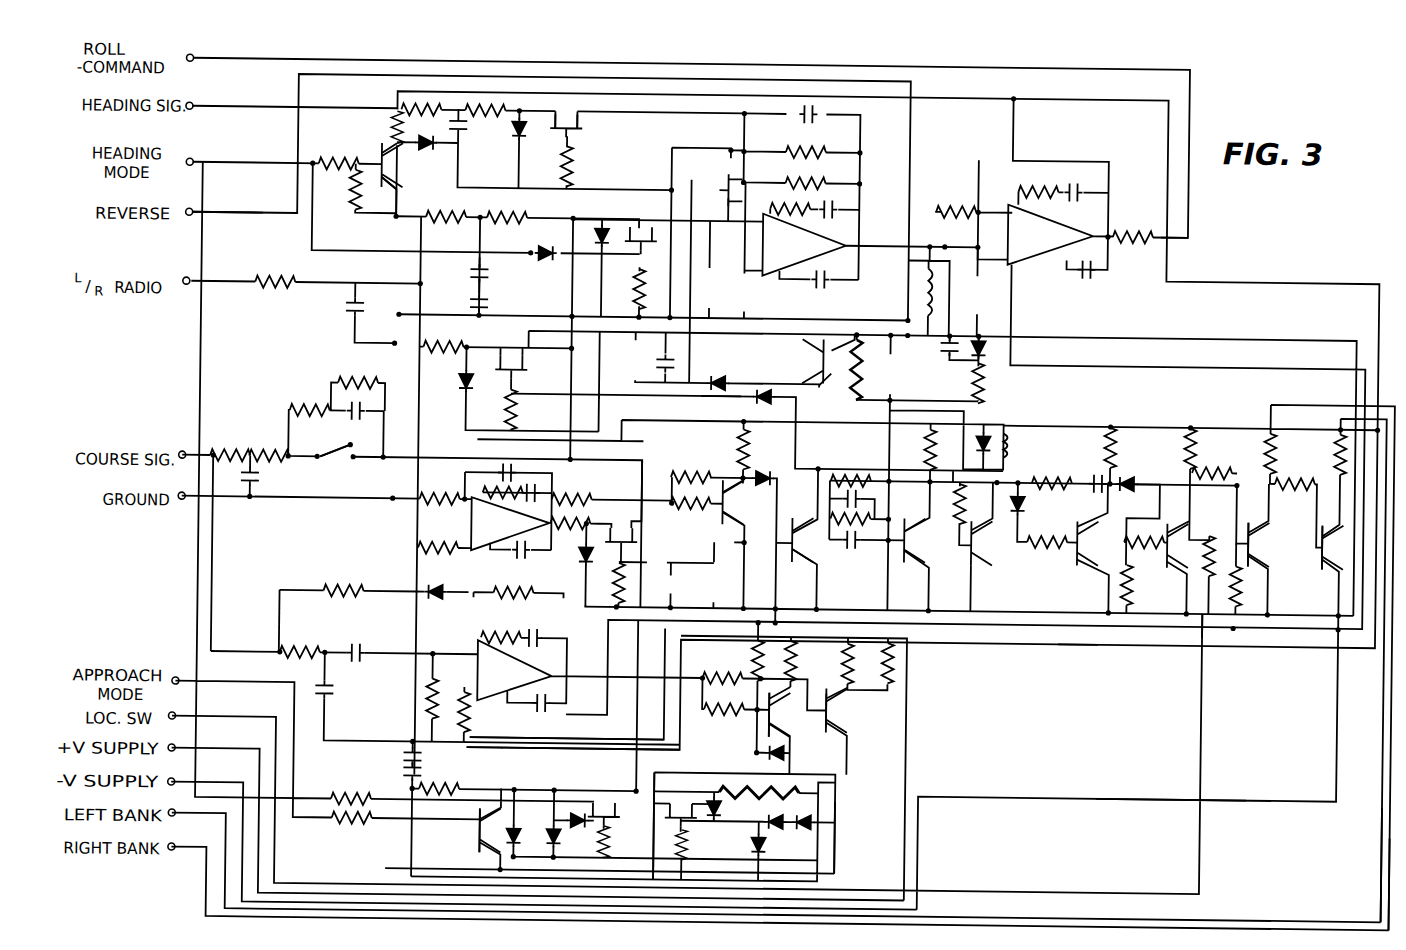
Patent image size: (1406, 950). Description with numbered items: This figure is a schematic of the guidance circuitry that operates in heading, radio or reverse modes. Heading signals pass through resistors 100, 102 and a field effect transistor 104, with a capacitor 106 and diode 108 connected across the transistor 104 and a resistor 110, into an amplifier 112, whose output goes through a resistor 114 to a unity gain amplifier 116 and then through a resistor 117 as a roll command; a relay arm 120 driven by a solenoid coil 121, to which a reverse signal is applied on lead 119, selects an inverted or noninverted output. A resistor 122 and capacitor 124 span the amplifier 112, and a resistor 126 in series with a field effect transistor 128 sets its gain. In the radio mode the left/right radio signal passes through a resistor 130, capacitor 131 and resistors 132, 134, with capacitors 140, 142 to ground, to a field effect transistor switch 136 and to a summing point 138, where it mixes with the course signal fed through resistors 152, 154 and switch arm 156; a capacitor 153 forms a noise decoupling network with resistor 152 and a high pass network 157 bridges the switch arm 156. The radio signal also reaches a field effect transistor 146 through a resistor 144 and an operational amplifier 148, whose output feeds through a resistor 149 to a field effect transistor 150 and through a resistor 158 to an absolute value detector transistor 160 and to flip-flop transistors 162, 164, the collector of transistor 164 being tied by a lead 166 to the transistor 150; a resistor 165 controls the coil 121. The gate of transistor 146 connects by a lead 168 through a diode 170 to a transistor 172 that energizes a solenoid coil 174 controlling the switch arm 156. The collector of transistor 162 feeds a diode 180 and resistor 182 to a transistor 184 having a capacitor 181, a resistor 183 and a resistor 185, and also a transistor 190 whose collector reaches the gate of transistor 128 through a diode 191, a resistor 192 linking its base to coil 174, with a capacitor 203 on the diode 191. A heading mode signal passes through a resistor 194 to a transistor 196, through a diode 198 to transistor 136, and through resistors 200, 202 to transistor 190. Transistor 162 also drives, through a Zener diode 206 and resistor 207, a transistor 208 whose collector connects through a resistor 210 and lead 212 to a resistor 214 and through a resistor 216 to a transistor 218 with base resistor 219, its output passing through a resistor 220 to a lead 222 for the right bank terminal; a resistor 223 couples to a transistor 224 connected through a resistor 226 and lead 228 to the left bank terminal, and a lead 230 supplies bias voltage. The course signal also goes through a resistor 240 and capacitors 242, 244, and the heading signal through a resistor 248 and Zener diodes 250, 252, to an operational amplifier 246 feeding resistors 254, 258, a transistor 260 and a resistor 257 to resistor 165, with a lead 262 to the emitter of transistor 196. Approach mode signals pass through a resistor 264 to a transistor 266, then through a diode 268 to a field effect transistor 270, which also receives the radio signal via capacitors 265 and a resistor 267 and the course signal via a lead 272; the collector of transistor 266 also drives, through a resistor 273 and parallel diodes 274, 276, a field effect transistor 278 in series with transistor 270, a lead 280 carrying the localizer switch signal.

The resistor 100 is at (422, 105).
The resistor 102 is at (482, 108).
The field effect transistor 104 is at (636, 133).
The capacitor 106 is at (458, 134).
The diode 108 is at (514, 138).
The resistor 110 is at (570, 174).
The amplifier 112 is at (803, 244).
The resistor 114 is at (953, 206).
The unity gain amplifier 116 is at (1056, 231).
The resistor 117 is at (1138, 228).
The lead 119 is at (252, 219).
The relay arm 120 is at (936, 239).
The solenoid coil 121 is at (922, 294).
The resistor 122 is at (785, 180).
The capacitor 124 is at (814, 117).
The resistor 126 is at (785, 149).
The field effect transistor 128 is at (716, 157).
The resistor 130 is at (266, 284).
The capacitor 131 is at (347, 303).
The resistor 132 is at (435, 218).
The resistor 134 is at (510, 220).
The field effect transistor switch 136 is at (637, 228).
The summing point 138 is at (572, 464).
The capacitor 140 is at (470, 278).
The capacitor 142 is at (470, 300).
The resistor 144 is at (444, 347).
The field effect transistor 146 is at (515, 356).
The operational amplifier 148 is at (479, 511).
The resistor 149 is at (571, 538).
The field effect transistor 150 is at (622, 527).
The resistor 152 is at (231, 453).
The capacitor 153 is at (259, 480).
The resistor 154 is at (274, 457).
The switch arm 156 is at (336, 468).
The high pass network 157 is at (320, 396).
The resistor 158 is at (715, 480).
The transistor 160 is at (745, 497).
The transistor 162 is at (808, 545).
The transistor 164 is at (925, 548).
The resistor 165 is at (984, 386).
The lead 166 is at (840, 564).
The lead 168 is at (701, 402).
The diode 170 is at (762, 404).
The transistor 172 is at (993, 551).
The solenoid coil 174 is at (993, 448).
The diode 180 is at (1024, 505).
The capacitor 181 is at (1092, 474).
The resistor 182 is at (1051, 544).
The resistor 183 is at (1105, 455).
The transistor 184 is at (1095, 538).
The resistor 185 is at (1004, 449).
The transistor 190 is at (818, 357).
The diode 191 is at (723, 381).
The resistor 192 is at (865, 377).
The resistor 194 is at (340, 165).
The transistor 196 is at (392, 172).
The diode 198 is at (538, 253).
The resistor 200 is at (630, 297).
The resistor 202 is at (620, 394).
The capacitor 203 is at (673, 360).
The Zener diode 206 is at (1132, 474).
The resistor 207 is at (1158, 547).
The transistor 208 is at (1205, 563).
The resistor 210 is at (1217, 630).
The lead 212 is at (1071, 642).
The resistor 214 is at (348, 799).
The resistor 216 is at (1204, 448).
The transistor 218 is at (1265, 545).
The resistor 219 is at (1247, 582).
The resistor 220 is at (1276, 442).
The lead 222 is at (1383, 824).
The resistor 223 is at (1288, 477).
The transistor 224 is at (1335, 530).
The resistor 226 is at (1337, 430).
The lead 228 is at (1392, 858).
The lead 230 is at (1120, 794).
The resistor 240 is at (293, 661).
The capacitor 242 is at (322, 640).
The capacitor 244 is at (360, 665).
The operational amplifier 246 is at (488, 681).
The resistor 248 is at (338, 593).
The Zener diode 250 is at (455, 575).
The Zener diode 252 is at (452, 613).
The resistor 254 is at (731, 673).
The resistor 257 is at (897, 672).
The resistor 258 is at (735, 715).
The transistor 260 is at (790, 710).
The lead 262 is at (660, 872).
The resistor 264 is at (343, 827).
The capacitors 265 is at (403, 776).
The transistor 266 is at (845, 712).
The resistor 267 is at (450, 788).
The diode 268 is at (580, 813).
The field effect transistor 270 is at (605, 804).
The lead 272 is at (635, 700).
The resistor 273 is at (583, 750).
The diode 274 is at (773, 848).
The diode 276 is at (820, 816).
The field effect transistor 278 is at (687, 805).
The lead 280 is at (840, 846).